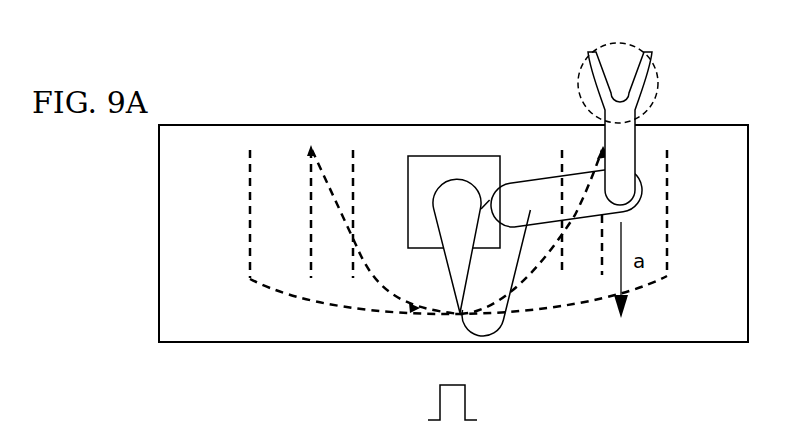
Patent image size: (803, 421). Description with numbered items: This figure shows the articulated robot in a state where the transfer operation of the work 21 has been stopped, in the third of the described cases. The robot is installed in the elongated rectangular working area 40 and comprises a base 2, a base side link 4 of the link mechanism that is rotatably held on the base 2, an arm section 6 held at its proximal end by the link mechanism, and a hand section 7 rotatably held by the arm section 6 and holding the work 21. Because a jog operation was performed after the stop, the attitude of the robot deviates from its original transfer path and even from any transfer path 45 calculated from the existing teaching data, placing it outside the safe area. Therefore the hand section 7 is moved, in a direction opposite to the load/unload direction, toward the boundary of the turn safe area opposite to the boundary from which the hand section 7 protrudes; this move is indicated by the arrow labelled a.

The working area 40 is at (280, 125).
The transfer path 45 is at (316, 298).
The base 2 is at (408, 157).
The base side link 4 is at (452, 186).
The arm section 6 is at (540, 185).
The hand section 7 is at (632, 147).
The work 21 is at (660, 87).